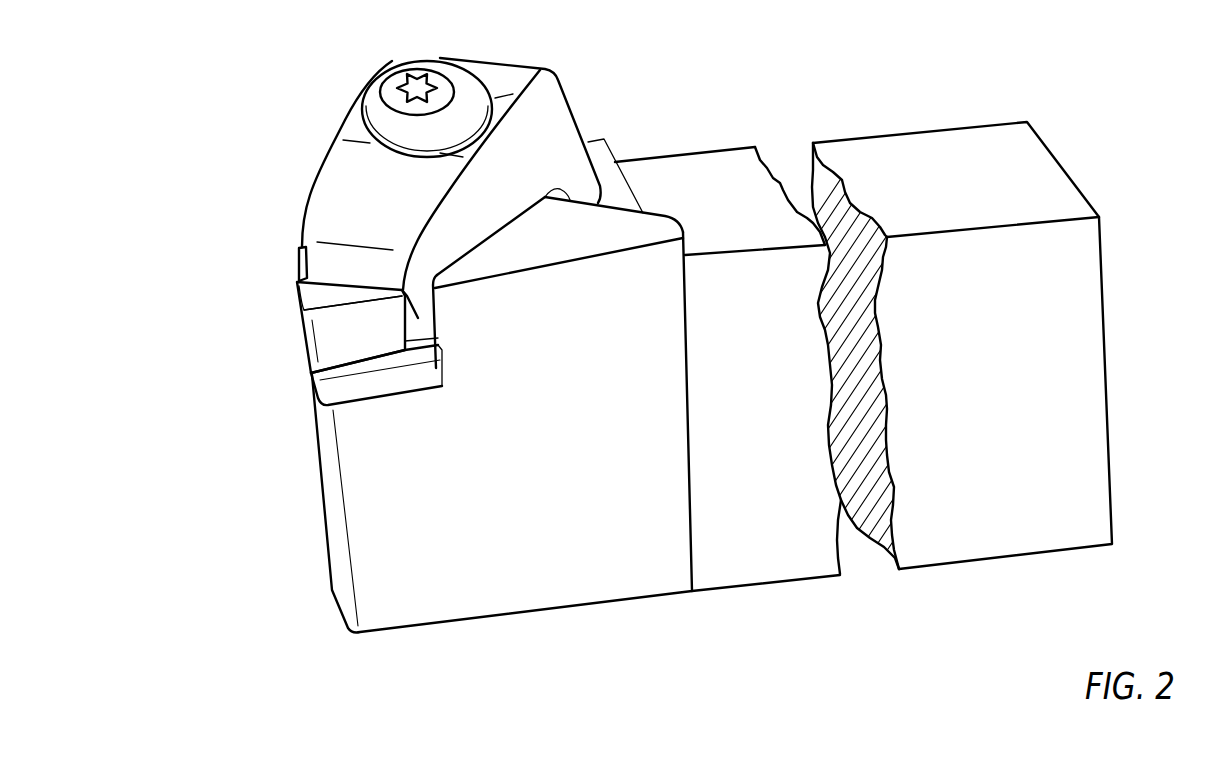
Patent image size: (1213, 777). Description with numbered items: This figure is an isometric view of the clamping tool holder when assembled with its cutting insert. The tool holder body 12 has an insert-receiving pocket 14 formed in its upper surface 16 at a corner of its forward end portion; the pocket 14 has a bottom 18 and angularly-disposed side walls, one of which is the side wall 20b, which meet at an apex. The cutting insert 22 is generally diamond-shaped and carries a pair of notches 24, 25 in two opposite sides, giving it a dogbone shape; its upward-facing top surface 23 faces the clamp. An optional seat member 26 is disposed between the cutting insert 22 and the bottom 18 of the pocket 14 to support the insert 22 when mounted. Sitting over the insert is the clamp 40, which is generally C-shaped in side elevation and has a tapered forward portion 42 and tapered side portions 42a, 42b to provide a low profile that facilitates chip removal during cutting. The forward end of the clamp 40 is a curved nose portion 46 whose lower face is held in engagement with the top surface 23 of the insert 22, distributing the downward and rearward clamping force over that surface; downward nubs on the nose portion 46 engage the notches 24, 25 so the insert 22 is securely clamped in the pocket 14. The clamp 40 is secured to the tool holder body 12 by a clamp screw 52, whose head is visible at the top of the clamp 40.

The tool holder body 12 is at (950, 165).
The insert-receiving pocket 14 is at (290, 476).
The upper surface 16 is at (617, 238).
The bottom 18 is at (440, 381).
The side wall 20b is at (440, 333).
The cutting insert 22 is at (298, 332).
The top surface 23 is at (353, 297).
The notch 24 is at (420, 317).
The notch 25 is at (303, 275).
The seat member 26 is at (310, 387).
The clamp 40 is at (582, 100).
The tapered forward portion 42 is at (345, 190).
The tapered side portion 42a is at (478, 207).
The tapered side portion 42b is at (322, 150).
The curved nose portion 46 is at (330, 290).
The clamp screw 52 is at (385, 64).